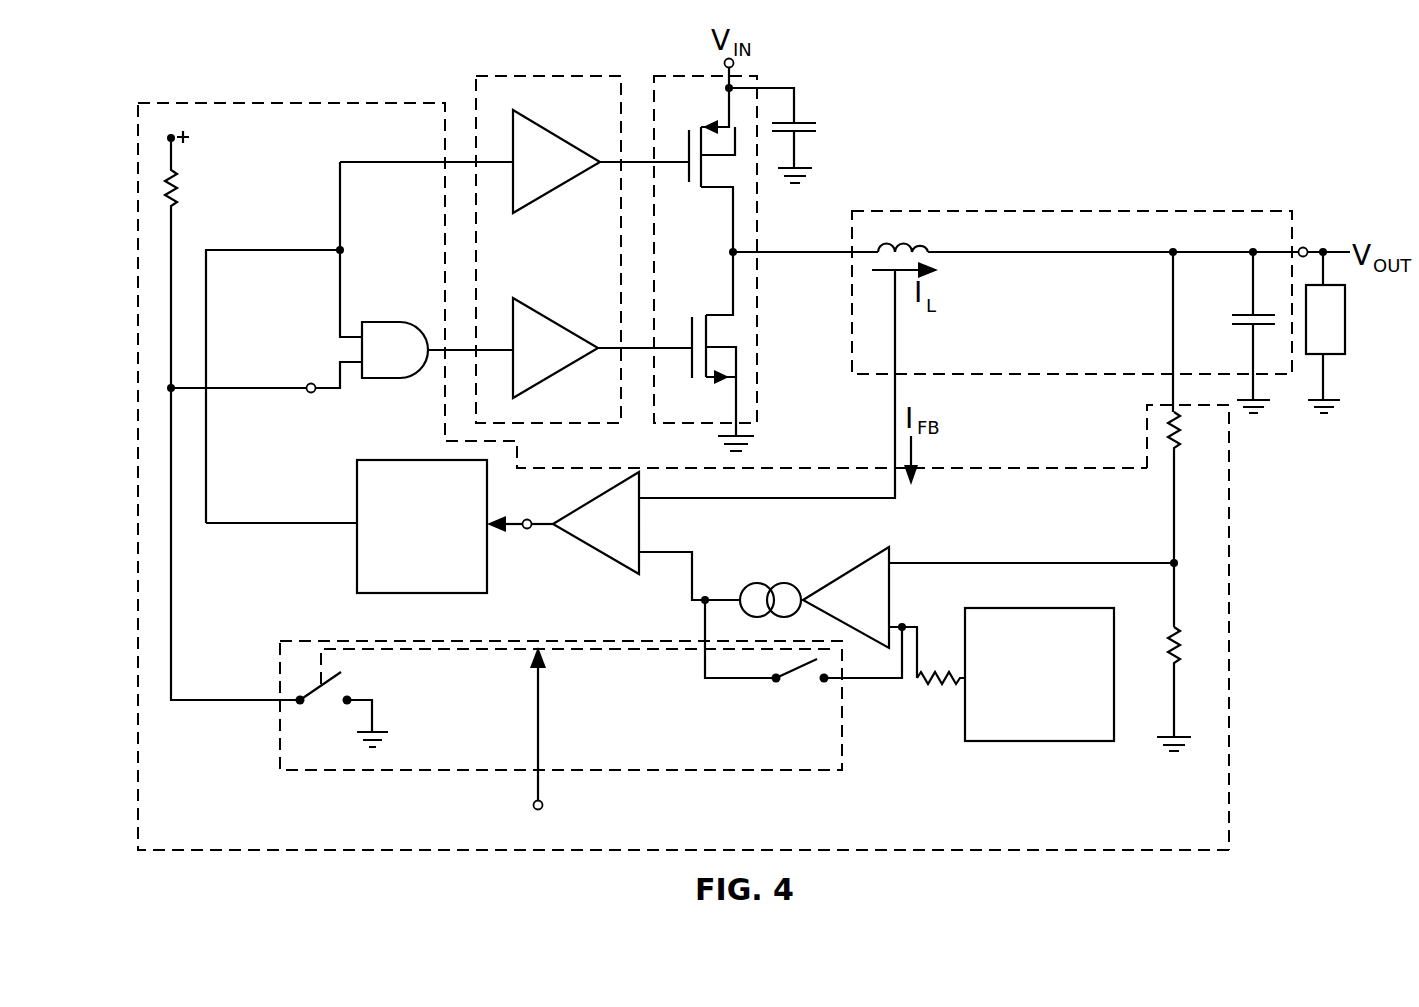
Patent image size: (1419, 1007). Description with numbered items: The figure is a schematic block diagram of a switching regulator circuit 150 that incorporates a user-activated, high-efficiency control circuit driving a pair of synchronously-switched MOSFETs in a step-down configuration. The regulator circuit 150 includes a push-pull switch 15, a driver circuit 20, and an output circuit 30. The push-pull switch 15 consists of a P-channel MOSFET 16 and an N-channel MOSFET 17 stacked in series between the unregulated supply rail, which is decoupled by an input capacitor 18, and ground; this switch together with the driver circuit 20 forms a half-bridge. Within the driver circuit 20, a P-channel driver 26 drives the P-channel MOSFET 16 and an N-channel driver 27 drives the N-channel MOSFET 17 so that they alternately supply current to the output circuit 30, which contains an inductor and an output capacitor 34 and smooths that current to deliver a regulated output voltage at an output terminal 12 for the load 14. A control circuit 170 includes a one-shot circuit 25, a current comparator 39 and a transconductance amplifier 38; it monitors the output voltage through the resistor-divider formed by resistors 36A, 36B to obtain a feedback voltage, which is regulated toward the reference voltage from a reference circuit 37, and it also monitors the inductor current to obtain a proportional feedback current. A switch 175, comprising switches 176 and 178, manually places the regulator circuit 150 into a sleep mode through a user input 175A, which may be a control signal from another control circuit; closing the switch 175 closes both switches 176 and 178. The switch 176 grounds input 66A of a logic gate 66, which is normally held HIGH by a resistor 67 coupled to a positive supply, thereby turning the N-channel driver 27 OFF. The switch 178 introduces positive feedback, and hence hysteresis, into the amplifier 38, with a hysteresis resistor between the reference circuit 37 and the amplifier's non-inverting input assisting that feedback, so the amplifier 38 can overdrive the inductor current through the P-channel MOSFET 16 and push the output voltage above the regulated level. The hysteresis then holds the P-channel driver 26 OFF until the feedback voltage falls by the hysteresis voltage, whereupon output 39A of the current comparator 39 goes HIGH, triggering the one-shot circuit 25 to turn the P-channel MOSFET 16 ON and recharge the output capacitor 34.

The switching regulator circuit 150 is at (977, 163).
The driver circuit 20 is at (510, 76).
The push-pull switch 15 is at (702, 76).
The input capacitor CIN 18 is at (794, 118).
The P-channel MOSFET 16 is at (712, 192).
The N-channel MOSFET 17 is at (712, 383).
The P-channel driver 26 is at (542, 198).
The N-channel driver 27 is at (558, 322).
The AND gate 66 is at (386, 322).
The input of AND gate 66A is at (312, 383).
The resistor 67 is at (181, 179).
The output circuit 30 is at (1018, 211).
The output terminal 12 is at (1303, 247).
The output capacitor 34 is at (1245, 313).
The load 14 is at (1336, 356).
The one-shot circuit 25 is at (436, 594).
The current comparator 39 is at (608, 562).
The output of current comparator 39A is at (527, 529).
The transconductance amplifier 38 is at (847, 568).
The reference circuit 37 is at (1042, 608).
The resistor of resistor-divider network 36A is at (1178, 443).
The resistor of resistor-divider network 36B is at (1178, 660).
The control circuit 170 is at (1226, 549).
The switch 175 is at (710, 772).
The user input 175A is at (542, 808).
The switch 176 is at (325, 702).
The switch 178 is at (805, 692).